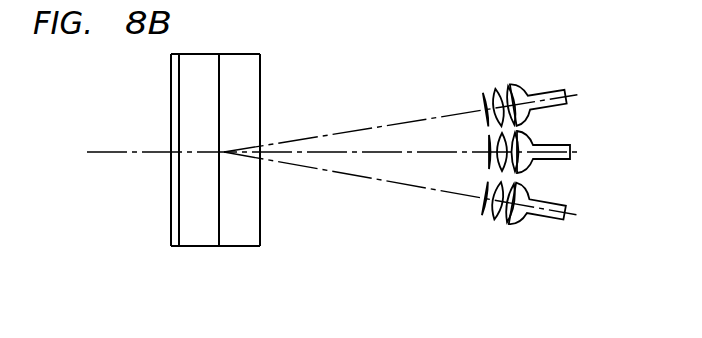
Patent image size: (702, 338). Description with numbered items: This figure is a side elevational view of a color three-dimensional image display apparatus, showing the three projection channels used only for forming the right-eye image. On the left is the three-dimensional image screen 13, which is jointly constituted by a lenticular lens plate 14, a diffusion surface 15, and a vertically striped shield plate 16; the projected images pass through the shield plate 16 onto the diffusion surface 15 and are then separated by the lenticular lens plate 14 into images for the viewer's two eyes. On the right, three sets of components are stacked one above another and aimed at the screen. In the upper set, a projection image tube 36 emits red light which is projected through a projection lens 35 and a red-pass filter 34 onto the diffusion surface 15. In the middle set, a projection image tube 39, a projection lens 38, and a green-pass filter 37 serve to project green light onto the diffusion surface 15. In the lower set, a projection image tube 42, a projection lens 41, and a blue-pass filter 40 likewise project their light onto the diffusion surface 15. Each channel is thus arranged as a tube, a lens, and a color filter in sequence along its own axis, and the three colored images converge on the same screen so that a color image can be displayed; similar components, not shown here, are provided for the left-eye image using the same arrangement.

The three-dimensional image screen 13 is at (235, 54).
The lenticular lens plate 14 is at (192, 240).
The diffusion surface 15 is at (220, 235).
The vertically striped shield plate 16 is at (260, 220).
The red-pass filter 34 is at (482, 95).
The projection lens 35 is at (497, 86).
The projection image tube 36 is at (517, 82).
The green-pass filter 37 is at (488, 162).
The projection lens 38 is at (497, 175).
The projection image tube 39 is at (556, 146).
The blue-pass filter 40 is at (484, 210).
The projection lens 41 is at (496, 220).
The projection image tube 42 is at (535, 221).